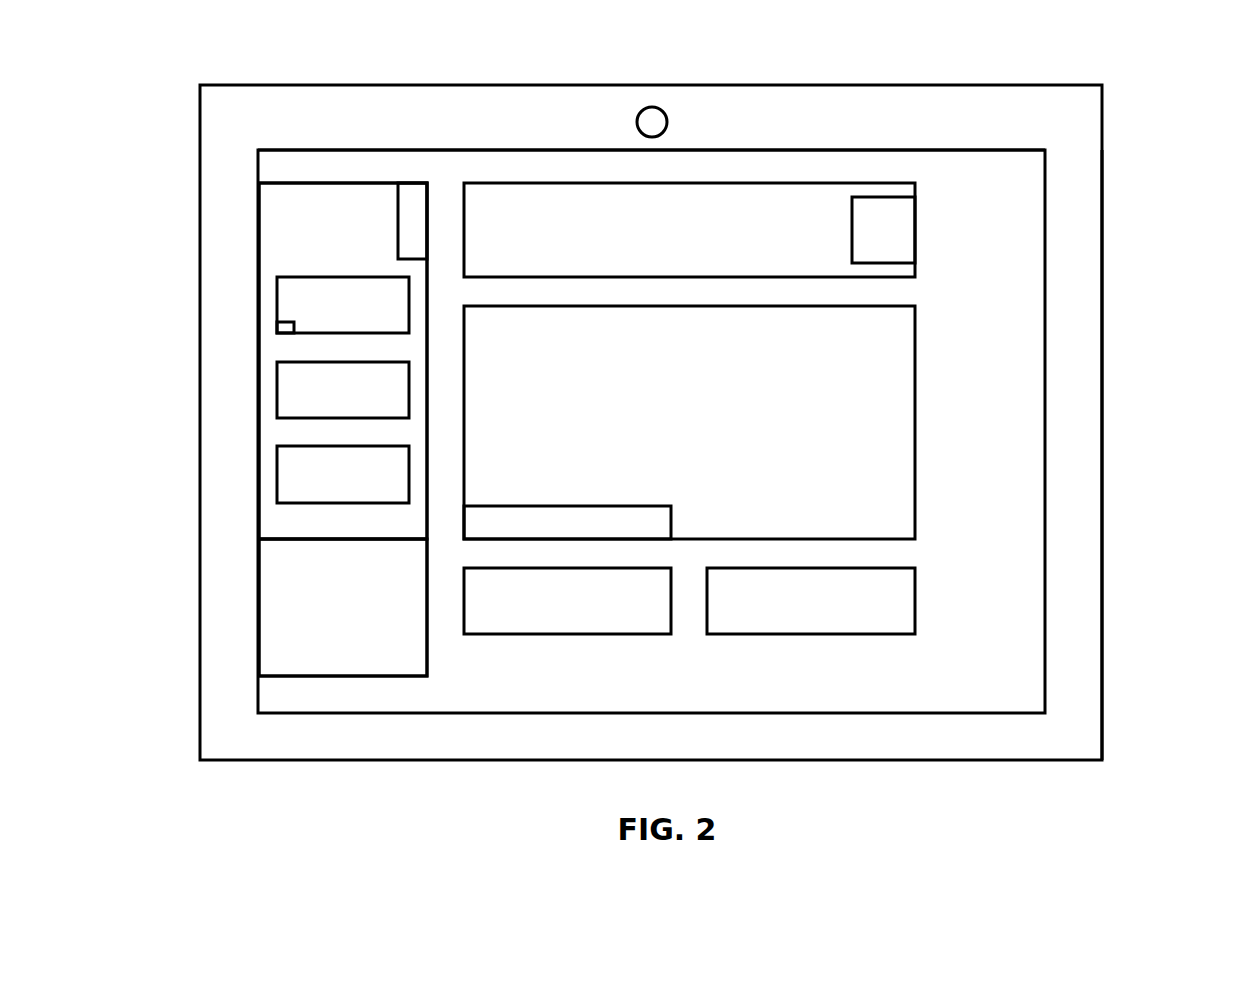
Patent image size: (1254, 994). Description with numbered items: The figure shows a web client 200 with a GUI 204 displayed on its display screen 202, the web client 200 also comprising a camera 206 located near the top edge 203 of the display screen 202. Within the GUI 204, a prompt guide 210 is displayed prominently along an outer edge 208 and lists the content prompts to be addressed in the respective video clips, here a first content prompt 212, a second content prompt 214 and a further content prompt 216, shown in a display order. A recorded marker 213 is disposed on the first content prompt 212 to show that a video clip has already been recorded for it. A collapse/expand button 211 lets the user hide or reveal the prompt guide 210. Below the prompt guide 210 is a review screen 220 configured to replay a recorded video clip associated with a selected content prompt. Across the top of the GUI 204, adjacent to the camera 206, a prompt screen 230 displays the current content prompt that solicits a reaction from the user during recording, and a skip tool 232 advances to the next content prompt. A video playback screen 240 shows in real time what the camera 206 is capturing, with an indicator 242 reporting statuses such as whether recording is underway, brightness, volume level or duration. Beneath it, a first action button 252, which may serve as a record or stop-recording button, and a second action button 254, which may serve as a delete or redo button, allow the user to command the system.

The web client 200 is at (1107, 300).
The display screen 202 is at (1050, 196).
The top edge 203 is at (1012, 146).
The GUI 204 is at (981, 200).
The camera 206 is at (652, 122).
The outer edge 208 is at (255, 510).
The prompt guide 210 is at (343, 361).
The collapse/expand button 211 is at (420, 187).
The first content prompt 212 is at (343, 305).
The recorded marker 213 is at (277, 327).
The second content prompt 214 is at (343, 390).
The content prompt 216 is at (343, 474).
The review screen 220 is at (343, 607).
The prompt screen 230 is at (689, 230).
The skip tool 232 is at (883, 230).
The video playback screen 240 is at (689, 422).
The indicator 242 is at (567, 522).
The action button 252 is at (567, 601).
The action button 254 is at (811, 601).